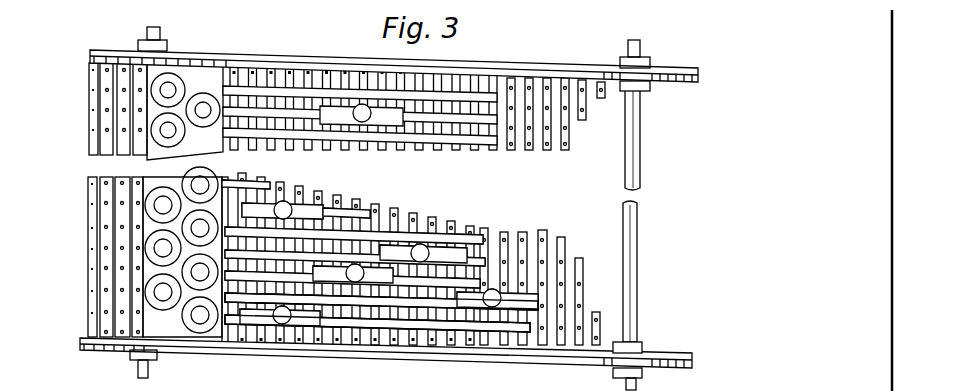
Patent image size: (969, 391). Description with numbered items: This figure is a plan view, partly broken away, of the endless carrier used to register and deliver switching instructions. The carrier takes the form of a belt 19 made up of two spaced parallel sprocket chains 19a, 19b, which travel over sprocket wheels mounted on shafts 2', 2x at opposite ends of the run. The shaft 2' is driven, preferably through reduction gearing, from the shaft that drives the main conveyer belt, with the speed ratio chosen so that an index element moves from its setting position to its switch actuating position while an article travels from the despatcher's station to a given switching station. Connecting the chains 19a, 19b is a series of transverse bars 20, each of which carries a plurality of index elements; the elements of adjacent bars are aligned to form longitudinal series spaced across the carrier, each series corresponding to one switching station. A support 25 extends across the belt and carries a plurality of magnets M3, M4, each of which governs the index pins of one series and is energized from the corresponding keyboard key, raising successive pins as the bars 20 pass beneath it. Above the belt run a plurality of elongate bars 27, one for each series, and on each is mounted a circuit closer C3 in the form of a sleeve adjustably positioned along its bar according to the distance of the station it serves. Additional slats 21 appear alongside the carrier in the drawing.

The belt 19 is at (80, 111).
The sprocket chain 19a is at (158, 350).
The sprocket chain 19b is at (168, 52).
The shaft 2' is at (113, 371).
The shaft 2x is at (634, 386).
The transverse bars 20 is at (575, 318).
The left slats 21 is at (120, 268).
The support 25 is at (240, 305).
The bars 27 is at (432, 322).
The circuit closer C3 is at (334, 110).
The magnet M3 is at (160, 300).
The magnet M4 is at (218, 297).